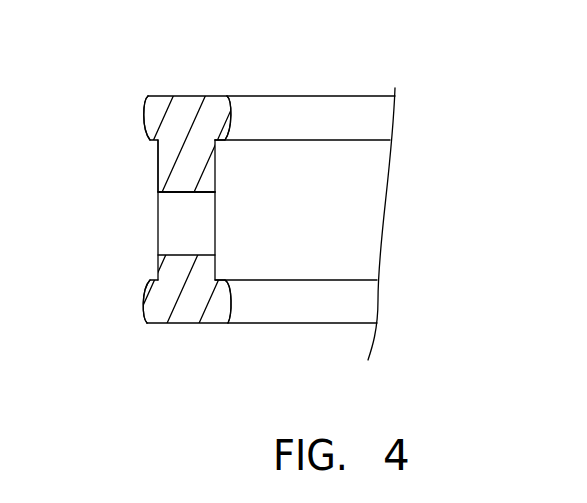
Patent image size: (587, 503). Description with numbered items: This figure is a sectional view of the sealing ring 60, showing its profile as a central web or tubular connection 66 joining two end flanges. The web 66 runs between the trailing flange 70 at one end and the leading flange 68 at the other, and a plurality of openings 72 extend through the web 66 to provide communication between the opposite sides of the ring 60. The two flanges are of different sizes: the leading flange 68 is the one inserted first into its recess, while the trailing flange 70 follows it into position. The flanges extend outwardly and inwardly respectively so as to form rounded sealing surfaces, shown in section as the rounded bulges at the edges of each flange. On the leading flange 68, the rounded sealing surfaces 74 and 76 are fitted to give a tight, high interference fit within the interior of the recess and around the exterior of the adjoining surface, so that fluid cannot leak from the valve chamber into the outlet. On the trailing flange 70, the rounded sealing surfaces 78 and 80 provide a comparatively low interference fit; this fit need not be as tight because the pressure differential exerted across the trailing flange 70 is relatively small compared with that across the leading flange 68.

The sealing ring 60 is at (272, 96).
The trailing flange 70 is at (148, 113).
The rounded sealing surface 78 is at (147, 124).
The rounded sealing surface 80 is at (228, 125).
The central web 66 is at (168, 175).
The openings 72 is at (175, 193).
The leading flange 68 is at (148, 303).
The rounded sealing surface 74 is at (148, 325).
The rounded sealing surface 76 is at (229, 314).